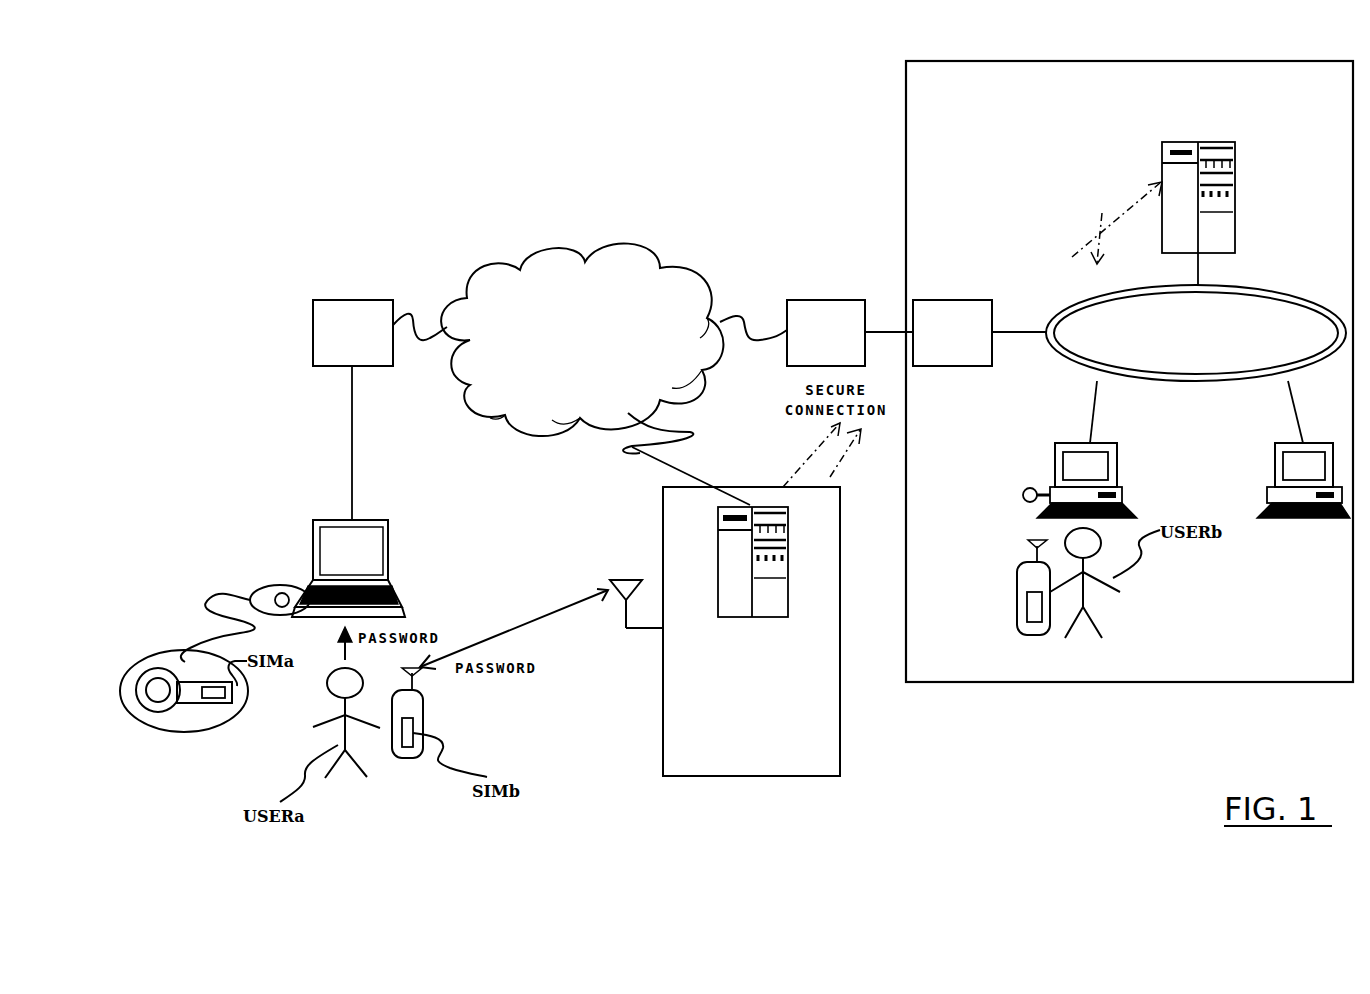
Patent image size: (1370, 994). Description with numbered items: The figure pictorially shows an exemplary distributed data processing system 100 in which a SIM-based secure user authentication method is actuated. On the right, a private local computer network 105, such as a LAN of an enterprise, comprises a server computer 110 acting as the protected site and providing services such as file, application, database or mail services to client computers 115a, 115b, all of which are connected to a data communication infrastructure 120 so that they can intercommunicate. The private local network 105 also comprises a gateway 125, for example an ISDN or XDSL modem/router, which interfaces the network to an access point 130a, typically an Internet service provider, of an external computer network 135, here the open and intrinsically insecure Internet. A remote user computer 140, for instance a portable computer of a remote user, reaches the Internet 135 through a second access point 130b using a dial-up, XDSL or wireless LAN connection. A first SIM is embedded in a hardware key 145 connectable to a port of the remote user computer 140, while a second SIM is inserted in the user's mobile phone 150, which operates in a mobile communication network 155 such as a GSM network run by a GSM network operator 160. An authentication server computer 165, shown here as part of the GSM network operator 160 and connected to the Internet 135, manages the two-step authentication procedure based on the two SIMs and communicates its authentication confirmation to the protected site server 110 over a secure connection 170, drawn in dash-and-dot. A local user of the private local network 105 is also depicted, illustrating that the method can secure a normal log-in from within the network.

The distributed data processing system 100 is at (262, 130).
The private local computer network 105 is at (906, 126).
The server computer 110 is at (1233, 182).
The client computer 115a is at (1055, 479).
The client computer 115b is at (1275, 474).
The data communication infrastructure 120 is at (1070, 372).
The gateway 125 is at (955, 300).
The access point 130a is at (826, 300).
The access point 130b is at (352, 300).
The external computer network 135 is at (573, 245).
The remote user computer 140 is at (313, 542).
The hardware key 145 is at (163, 668).
The mobile phone 150 is at (426, 718).
The mobile communication network 155 is at (515, 640).
The GSM network operator 160 is at (840, 728).
The authentication server computer 165 is at (718, 560).
The secure connection 170 is at (802, 463).